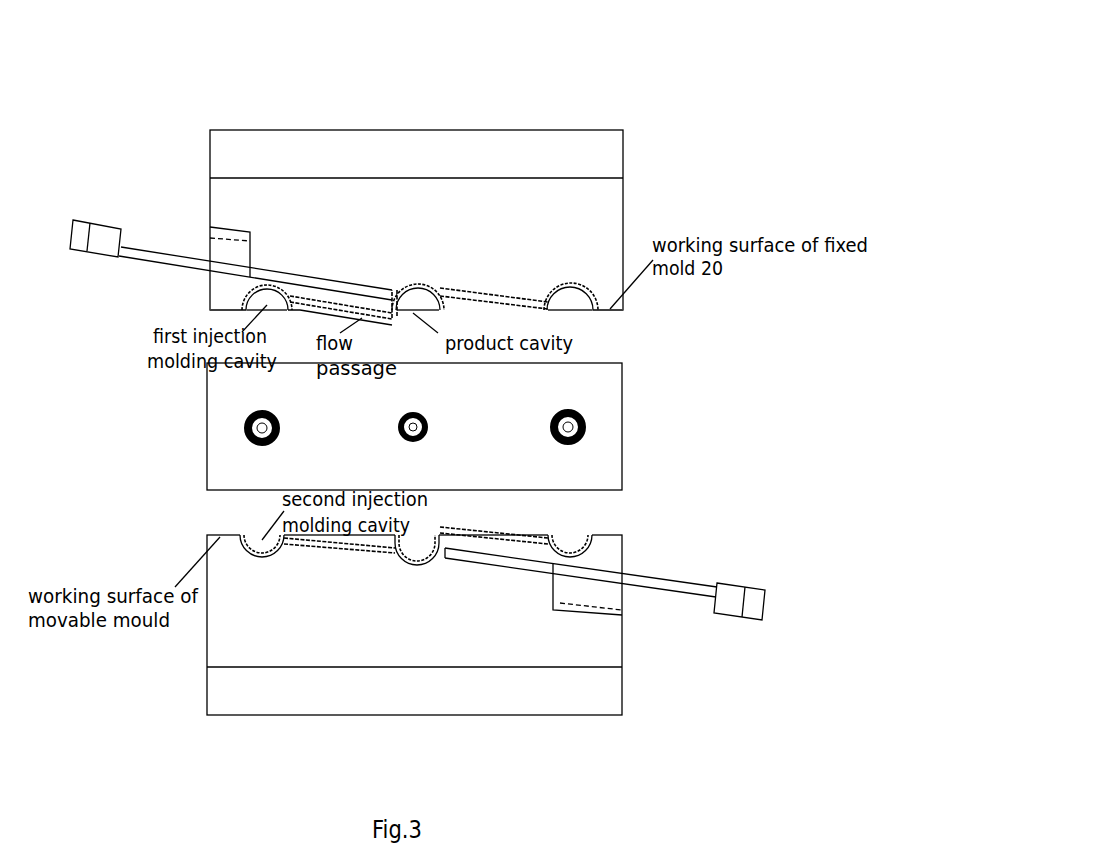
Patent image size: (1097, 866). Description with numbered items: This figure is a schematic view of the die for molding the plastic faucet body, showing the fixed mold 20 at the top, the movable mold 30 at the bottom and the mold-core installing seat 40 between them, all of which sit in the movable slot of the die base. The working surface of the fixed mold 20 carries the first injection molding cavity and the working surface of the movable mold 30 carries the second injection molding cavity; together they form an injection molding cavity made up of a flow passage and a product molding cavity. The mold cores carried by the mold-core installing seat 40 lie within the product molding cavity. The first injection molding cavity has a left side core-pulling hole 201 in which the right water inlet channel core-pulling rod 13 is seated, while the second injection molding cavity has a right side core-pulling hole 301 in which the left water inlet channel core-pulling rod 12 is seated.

The fixed mold 20 is at (423, 130).
The left side core-pulling hole 201 is at (250, 247).
The right water inlet channel core-pulling rod 13 is at (108, 247).
The mold-core installing seat 40 is at (593, 385).
The movable mold 30 is at (562, 620).
The right side core-pulling hole 301 is at (585, 603).
The left water inlet channel core-pulling rod 12 is at (745, 587).